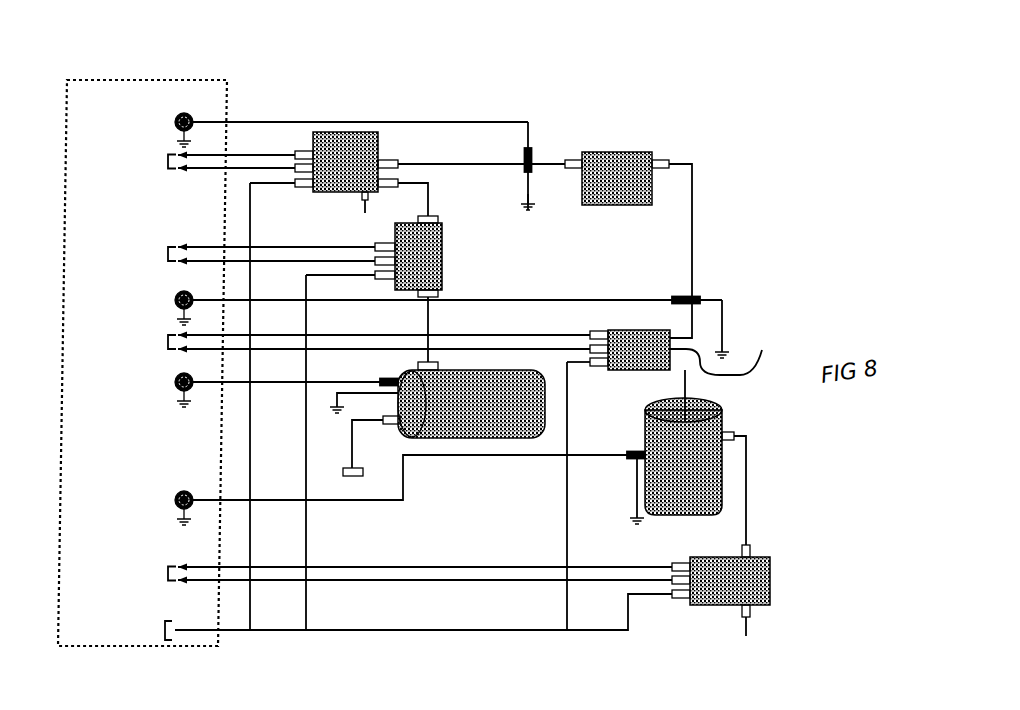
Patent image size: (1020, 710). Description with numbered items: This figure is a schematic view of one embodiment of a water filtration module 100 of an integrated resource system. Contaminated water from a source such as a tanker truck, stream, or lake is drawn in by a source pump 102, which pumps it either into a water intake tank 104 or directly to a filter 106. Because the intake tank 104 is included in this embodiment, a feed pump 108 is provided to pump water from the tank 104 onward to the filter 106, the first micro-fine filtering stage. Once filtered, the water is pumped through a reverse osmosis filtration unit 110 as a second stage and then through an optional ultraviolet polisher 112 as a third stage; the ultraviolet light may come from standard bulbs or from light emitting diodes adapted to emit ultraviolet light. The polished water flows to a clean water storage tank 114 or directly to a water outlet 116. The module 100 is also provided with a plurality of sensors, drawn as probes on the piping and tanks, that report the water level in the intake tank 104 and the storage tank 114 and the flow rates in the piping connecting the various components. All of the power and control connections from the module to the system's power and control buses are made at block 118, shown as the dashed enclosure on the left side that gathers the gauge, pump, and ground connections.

The water filtration module 100 is at (702, 106).
The source pump 102 is at (770, 578).
The water intake tank 104 is at (723, 421).
The filter 106 is at (610, 151).
The feed pump 108 is at (696, 329).
The reverse osmosis filtration unit 110 is at (366, 131).
The ultraviolet polisher 112 is at (442, 239).
The clean water storage tank 114 is at (519, 369).
The water outlet 116 is at (363, 471).
The block for power and control connections 118 is at (90, 80).